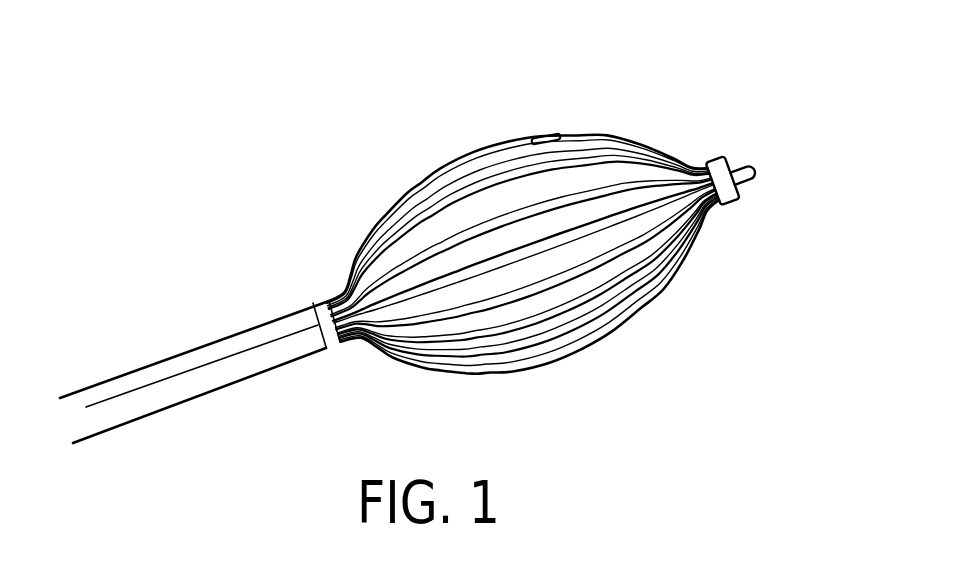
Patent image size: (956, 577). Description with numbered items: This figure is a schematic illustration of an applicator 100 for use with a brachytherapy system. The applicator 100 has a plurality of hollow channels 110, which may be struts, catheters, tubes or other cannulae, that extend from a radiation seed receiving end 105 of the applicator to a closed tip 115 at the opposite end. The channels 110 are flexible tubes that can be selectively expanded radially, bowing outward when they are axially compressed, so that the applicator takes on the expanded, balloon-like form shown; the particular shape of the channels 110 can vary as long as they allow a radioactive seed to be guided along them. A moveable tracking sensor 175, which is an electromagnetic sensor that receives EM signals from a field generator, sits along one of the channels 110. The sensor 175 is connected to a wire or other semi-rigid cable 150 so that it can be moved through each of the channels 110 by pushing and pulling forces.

The applicator 100 is at (225, 136).
The radiation seed receiving end 105 is at (192, 348).
The hollow channels 110 is at (628, 140).
The closed tip 115 is at (731, 195).
The semi-rigid cable 150 is at (442, 176).
The tracking sensor 175 is at (540, 135).